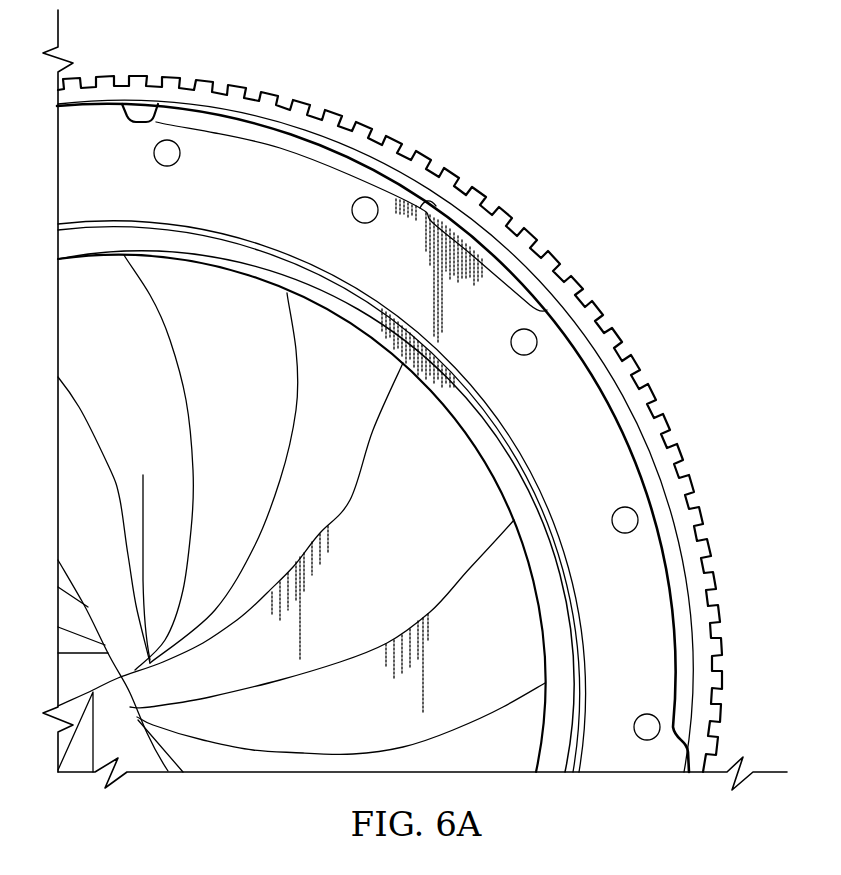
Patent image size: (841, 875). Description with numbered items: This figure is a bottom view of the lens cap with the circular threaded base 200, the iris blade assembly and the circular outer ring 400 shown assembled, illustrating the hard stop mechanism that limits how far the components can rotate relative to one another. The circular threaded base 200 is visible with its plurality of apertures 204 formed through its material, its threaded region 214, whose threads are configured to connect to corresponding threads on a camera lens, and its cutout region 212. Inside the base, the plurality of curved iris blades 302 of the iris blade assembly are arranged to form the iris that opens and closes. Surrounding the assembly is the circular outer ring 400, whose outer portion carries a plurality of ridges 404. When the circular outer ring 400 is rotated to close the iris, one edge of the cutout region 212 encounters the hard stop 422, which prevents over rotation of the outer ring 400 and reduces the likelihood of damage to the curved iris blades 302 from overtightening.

The circular threaded base 200 is at (326, 201).
The plurality of apertures 204 is at (527, 345).
The cutout region 212 is at (681, 673).
The threaded region 214 is at (233, 240).
The curved iris blades 302 is at (213, 380).
The circular outer ring 400 is at (199, 76).
The plurality of ridges 404 is at (288, 100).
The hard stop 422 is at (137, 124).